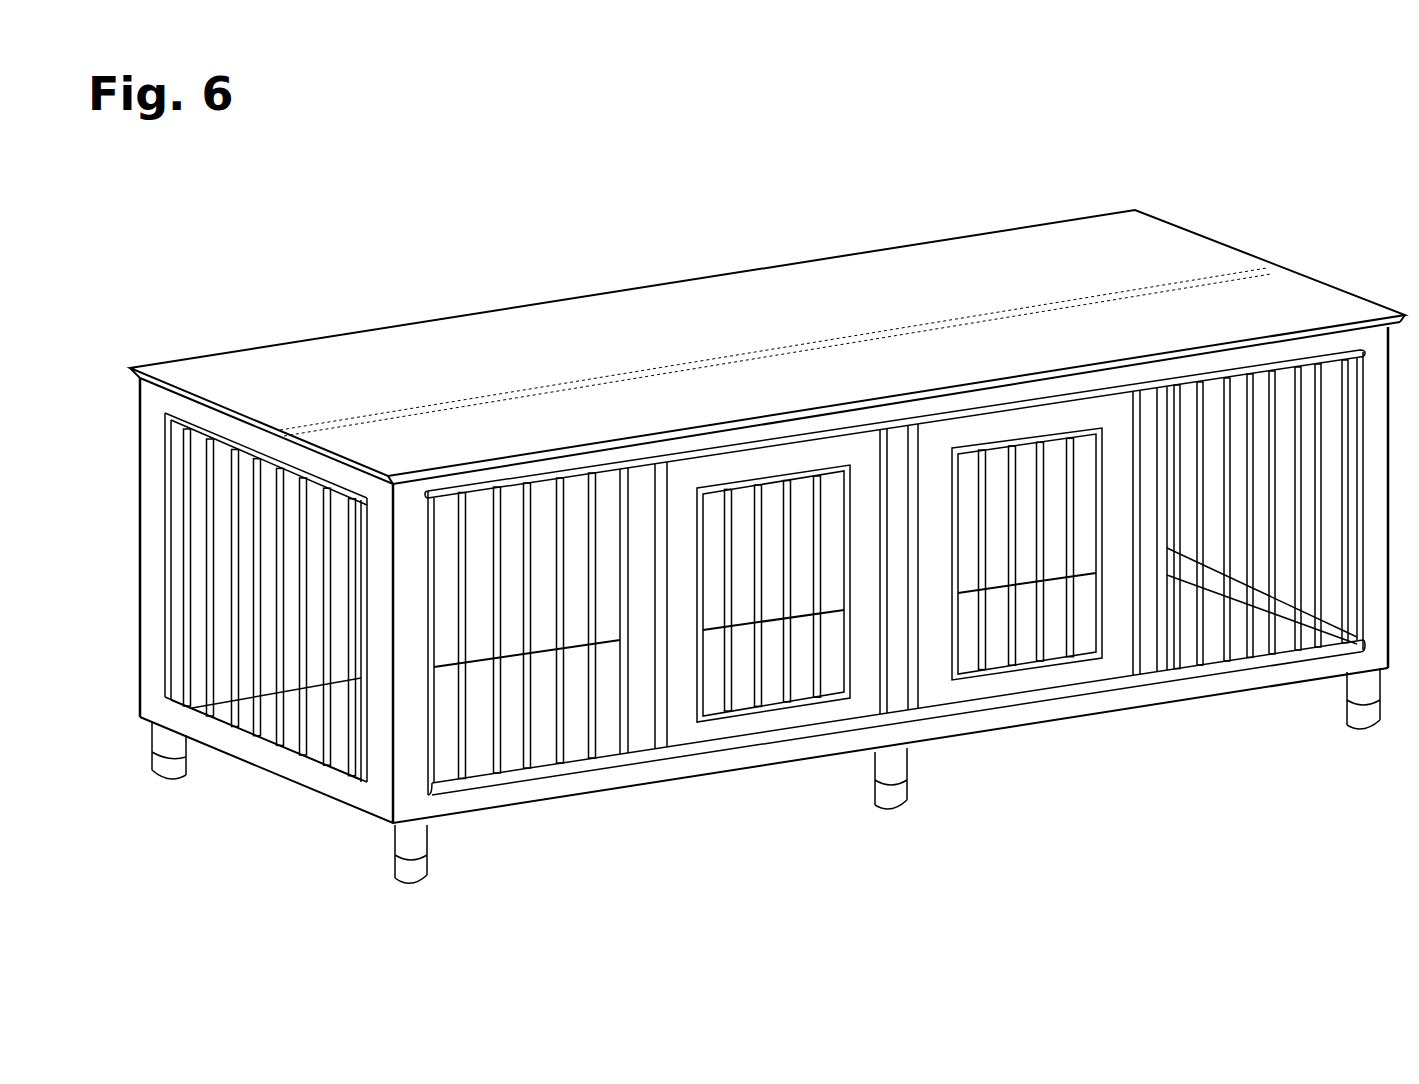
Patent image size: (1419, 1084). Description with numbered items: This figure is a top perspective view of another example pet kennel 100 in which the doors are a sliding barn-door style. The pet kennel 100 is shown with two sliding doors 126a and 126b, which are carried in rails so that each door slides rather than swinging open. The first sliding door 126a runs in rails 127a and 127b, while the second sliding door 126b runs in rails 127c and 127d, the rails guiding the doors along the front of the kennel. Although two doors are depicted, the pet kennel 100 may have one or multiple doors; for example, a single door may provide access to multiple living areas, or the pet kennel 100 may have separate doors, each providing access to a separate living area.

The pet kennel 100 is at (1325, 176).
The sliding door 126a is at (752, 712).
The sliding door 126b is at (1060, 703).
The rail 127a is at (553, 785).
The rail 127b is at (552, 478).
The rail 127c is at (1196, 680).
The rail 127d is at (990, 405).